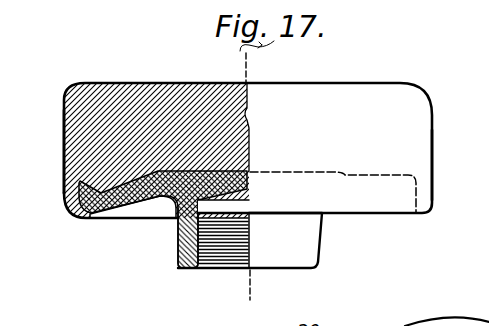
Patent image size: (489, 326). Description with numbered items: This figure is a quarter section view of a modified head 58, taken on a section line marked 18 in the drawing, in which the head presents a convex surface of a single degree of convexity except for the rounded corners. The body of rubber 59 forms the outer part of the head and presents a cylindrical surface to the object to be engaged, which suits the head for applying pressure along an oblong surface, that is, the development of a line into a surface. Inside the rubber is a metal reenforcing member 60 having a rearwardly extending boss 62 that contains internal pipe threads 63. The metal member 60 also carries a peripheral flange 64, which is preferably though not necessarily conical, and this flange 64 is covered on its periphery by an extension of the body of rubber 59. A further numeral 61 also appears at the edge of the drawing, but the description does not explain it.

The section line 18- 18 is at (232, 65).
The head 58 is at (436, 107).
The body of rubber 59 is at (117, 90).
The metal reenforcing member 60 is at (154, 188).
The cap side wall 61 is at (460, 165).
The rearwardly extending boss 62 is at (184, 237).
The internal pipe threads 63 is at (198, 256).
The peripheral flange 64 is at (65, 197).